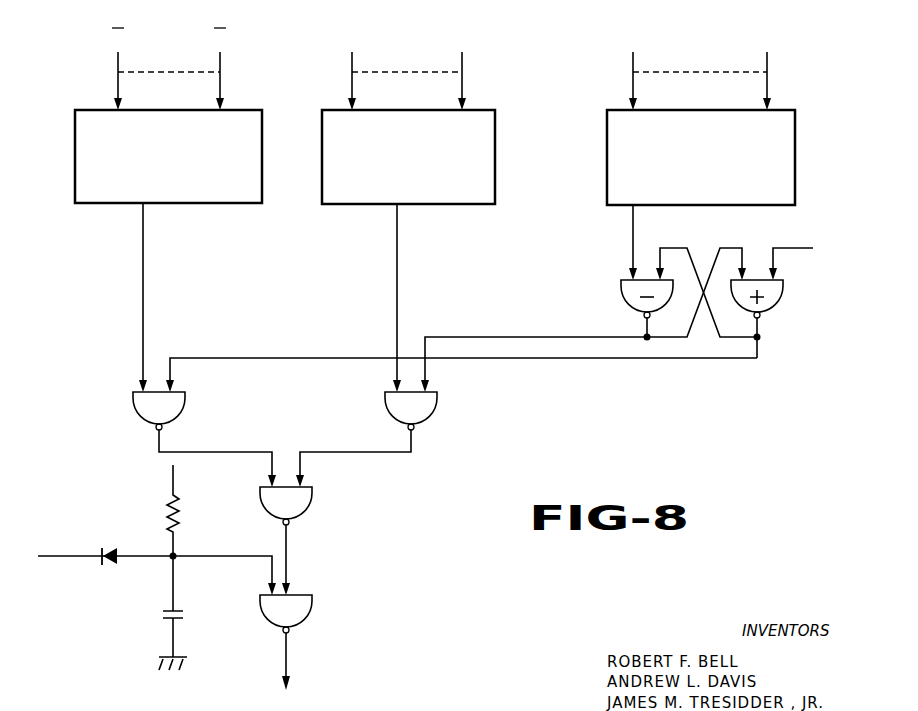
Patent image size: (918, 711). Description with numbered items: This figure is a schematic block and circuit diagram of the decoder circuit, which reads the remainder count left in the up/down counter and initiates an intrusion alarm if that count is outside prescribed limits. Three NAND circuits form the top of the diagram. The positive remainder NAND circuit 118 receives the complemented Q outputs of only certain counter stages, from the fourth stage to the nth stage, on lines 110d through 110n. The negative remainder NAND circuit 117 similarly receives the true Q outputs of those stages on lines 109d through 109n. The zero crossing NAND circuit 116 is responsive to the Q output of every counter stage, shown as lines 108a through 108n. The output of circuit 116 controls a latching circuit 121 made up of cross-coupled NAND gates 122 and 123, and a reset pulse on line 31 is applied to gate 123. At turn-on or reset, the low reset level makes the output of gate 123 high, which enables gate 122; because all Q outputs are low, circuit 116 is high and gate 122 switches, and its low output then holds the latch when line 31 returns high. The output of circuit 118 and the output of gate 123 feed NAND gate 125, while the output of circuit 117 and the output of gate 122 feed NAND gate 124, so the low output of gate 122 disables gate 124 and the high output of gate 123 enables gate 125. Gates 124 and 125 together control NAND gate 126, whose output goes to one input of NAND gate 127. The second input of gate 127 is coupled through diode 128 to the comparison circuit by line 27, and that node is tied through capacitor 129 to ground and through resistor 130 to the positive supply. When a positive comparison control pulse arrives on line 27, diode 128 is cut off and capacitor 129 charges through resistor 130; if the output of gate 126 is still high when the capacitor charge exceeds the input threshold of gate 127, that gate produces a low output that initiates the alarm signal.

The Q̄ output line of fourth counter stage 110d is at (116, 79).
The Q̄ output line of nth counter stage 110n is at (221, 72).
The Q output line of fourth counter stage 109d is at (350, 80).
The Q output line of nth counter stage 109n is at (463, 75).
The Q output line of first counter stage 108a is at (632, 78).
The Q output line of nth counter stage 108n is at (768, 74).
The positive remainder NAND circuit 118 is at (198, 203).
The negative remainder NAND circuit 117 is at (495, 158).
The zero crossing NAND circuit 116 is at (795, 158).
The latching circuit 121 is at (812, 288).
The NAND gate 122 is at (624, 300).
The NAND gate 123 is at (775, 305).
The reset pulse line 31 is at (798, 247).
The NAND gate 124 is at (437, 398).
The NAND gate 125 is at (133, 410).
The NAND gate 126 is at (312, 500).
The NAND gate 127 is at (310, 614).
The control pulse line 27 is at (73, 560).
The diode 128 is at (113, 563).
The capacitor 129 is at (184, 615).
The resistor 130 is at (183, 509).